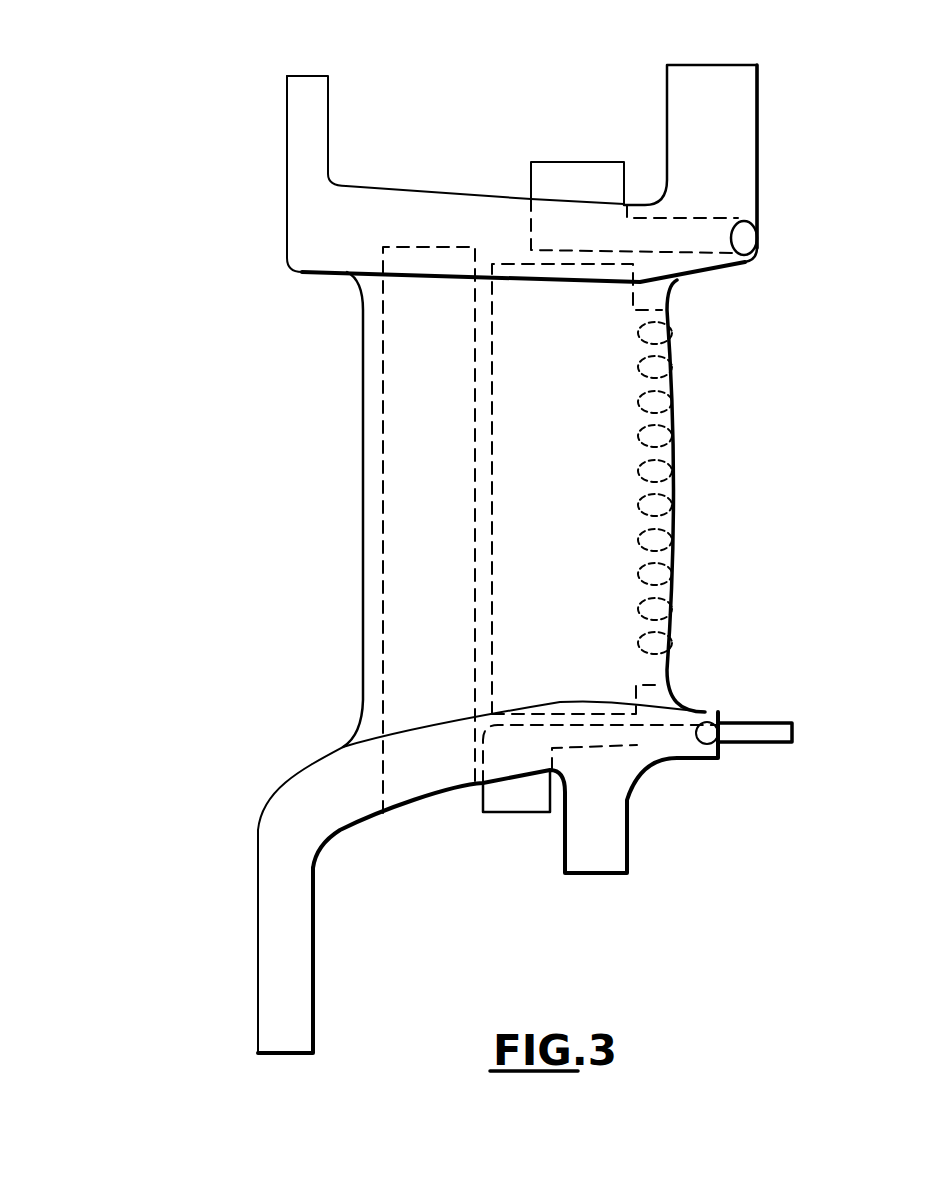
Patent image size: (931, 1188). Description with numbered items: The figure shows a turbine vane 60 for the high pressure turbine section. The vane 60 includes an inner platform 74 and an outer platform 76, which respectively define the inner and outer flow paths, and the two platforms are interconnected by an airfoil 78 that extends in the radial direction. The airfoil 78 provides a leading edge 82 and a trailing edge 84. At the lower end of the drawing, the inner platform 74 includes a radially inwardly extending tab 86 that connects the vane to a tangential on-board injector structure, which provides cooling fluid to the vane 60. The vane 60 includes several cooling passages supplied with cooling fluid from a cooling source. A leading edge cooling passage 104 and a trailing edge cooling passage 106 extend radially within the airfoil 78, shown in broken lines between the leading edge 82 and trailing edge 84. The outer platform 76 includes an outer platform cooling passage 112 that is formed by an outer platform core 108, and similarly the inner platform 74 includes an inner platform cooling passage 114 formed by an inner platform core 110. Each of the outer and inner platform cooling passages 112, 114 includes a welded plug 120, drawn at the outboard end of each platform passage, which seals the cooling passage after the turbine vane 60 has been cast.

The vane 60 is at (148, 413).
The inner platform 74 is at (335, 833).
The outer platform 76 is at (385, 208).
The airfoil 78 is at (508, 509).
The leading edge 82 is at (363, 343).
The trailing edge 84 is at (670, 348).
The tab 86 is at (272, 952).
The leading edge cooling passage 104 is at (383, 445).
The trailing edge cooling passage 106 is at (493, 435).
The outer platform core 108 is at (567, 173).
The inner platform core 110 is at (520, 800).
The outer platform cooling passage 112 is at (695, 226).
The inner platform cooling passage 114 is at (625, 740).
The welded plug 120 is at (750, 240).